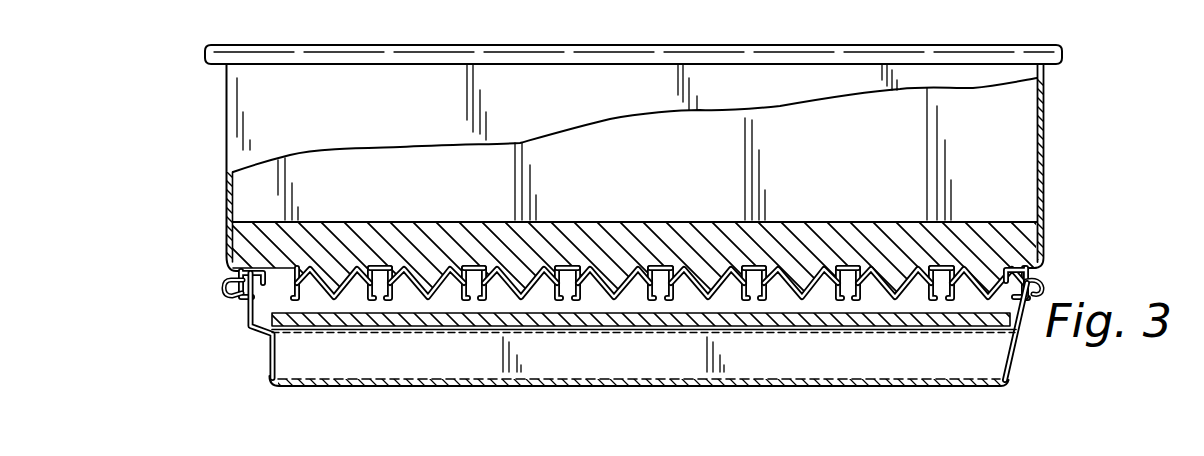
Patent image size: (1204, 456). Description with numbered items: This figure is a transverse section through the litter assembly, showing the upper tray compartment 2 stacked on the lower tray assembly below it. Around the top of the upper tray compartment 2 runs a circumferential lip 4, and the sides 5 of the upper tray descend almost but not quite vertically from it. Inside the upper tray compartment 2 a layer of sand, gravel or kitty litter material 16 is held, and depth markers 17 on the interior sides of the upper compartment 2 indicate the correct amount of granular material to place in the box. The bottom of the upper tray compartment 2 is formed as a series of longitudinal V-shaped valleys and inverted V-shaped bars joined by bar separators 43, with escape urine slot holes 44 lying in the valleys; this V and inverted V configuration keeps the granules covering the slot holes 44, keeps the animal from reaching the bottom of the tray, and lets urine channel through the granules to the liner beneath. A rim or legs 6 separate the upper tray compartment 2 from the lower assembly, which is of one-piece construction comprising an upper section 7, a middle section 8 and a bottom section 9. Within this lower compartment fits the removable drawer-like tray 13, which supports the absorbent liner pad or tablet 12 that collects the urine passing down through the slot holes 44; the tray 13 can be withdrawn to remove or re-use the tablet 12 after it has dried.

The upper tray compartment 2 is at (481, 78).
The circumferential lip 4 is at (700, 52).
The sides 5 is at (565, 73).
The rim or legs 6 is at (1040, 268).
The upper section 7 is at (1047, 283).
The middle section 8 is at (244, 310).
The bottom section 9 is at (268, 360).
The liner pad or tablet 12 is at (703, 323).
The drawer-like tray 13 is at (753, 331).
The kitty litter material 16 is at (476, 220).
The depth markers 17 is at (898, 17).
The bar separators 43 is at (615, 299).
The slot holes 44 is at (381, 299).